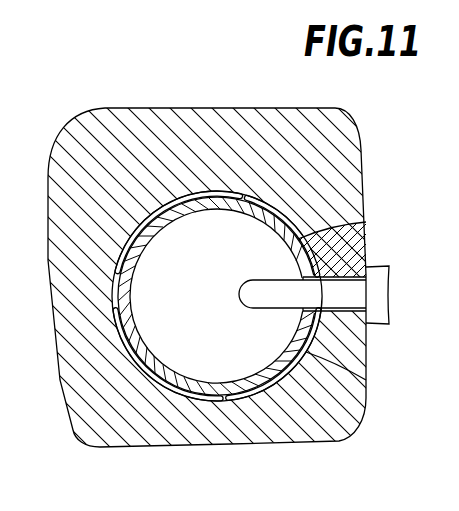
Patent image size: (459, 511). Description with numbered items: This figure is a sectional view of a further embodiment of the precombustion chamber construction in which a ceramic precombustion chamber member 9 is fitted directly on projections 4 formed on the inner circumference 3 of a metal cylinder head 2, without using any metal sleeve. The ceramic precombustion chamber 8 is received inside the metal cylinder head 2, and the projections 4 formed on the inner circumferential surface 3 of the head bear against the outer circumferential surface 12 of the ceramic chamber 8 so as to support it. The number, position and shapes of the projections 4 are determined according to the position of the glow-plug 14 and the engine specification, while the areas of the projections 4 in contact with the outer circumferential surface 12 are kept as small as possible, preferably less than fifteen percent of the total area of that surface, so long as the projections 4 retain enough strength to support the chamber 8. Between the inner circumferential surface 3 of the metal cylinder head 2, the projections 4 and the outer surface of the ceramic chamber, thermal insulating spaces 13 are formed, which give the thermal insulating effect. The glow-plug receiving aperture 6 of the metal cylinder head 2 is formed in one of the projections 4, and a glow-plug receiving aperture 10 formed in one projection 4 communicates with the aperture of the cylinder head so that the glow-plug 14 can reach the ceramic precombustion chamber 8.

The metal cylinder head 2 is at (266, 428).
The inner circumferential surface of the metal cylinder head 3 is at (127, 228).
The projections 4 is at (220, 190).
The glow-plug receiving aperture of the metal cylinder head 6 is at (366, 250).
The ceramic precombustion chamber 8 is at (177, 328).
The ceramic precombustion chamber member 9 is at (187, 388).
The glow-plug receiving aperture 10 is at (366, 218).
The outer circumferential surface of the ceramic precombustion chamber 12 is at (337, 428).
The thermal insulating spaces 13 is at (367, 378).
The glow-plug 14 is at (365, 293).